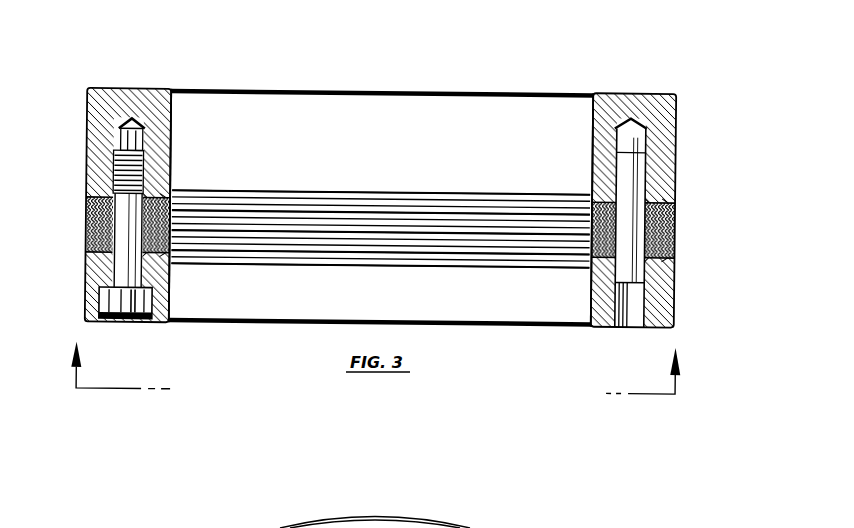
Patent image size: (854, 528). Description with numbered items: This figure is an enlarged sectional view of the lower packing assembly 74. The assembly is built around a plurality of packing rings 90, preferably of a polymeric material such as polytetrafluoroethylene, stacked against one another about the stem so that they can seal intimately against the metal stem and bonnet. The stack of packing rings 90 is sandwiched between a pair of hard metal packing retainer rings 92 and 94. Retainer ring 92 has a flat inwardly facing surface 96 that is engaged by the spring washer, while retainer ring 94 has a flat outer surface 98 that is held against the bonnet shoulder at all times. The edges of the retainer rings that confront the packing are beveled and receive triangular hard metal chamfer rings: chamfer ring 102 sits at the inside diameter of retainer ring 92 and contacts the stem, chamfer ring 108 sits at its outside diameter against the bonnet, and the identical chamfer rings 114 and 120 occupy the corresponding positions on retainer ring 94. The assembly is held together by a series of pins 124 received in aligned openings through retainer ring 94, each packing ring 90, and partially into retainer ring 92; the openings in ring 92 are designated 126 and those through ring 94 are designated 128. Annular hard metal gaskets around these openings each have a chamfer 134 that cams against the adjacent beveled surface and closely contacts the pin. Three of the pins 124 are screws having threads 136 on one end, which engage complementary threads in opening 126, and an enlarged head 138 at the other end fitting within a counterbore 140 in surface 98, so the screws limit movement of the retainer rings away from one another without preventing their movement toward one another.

The packing assembly 74 is at (624, 65).
The packing rings 90 is at (328, 222).
The retainer ring 92 is at (140, 91).
The retainer ring 94 is at (92, 276).
The inwardly facing surface 96 is at (162, 92).
The outer surface 98 is at (95, 327).
The chamfer ring 102 is at (206, 196).
The chamfer ring 108 is at (88, 204).
The chamfer ring 114 is at (238, 259).
The chamfer ring 120 is at (88, 256).
The pins 124 is at (625, 170).
The openings 126 is at (649, 150).
The openings 128 is at (647, 297).
The chamfer 134 is at (160, 197).
The threads 136 is at (110, 154).
The enlarged head 138 is at (130, 326).
The counterbores 140 is at (152, 327).